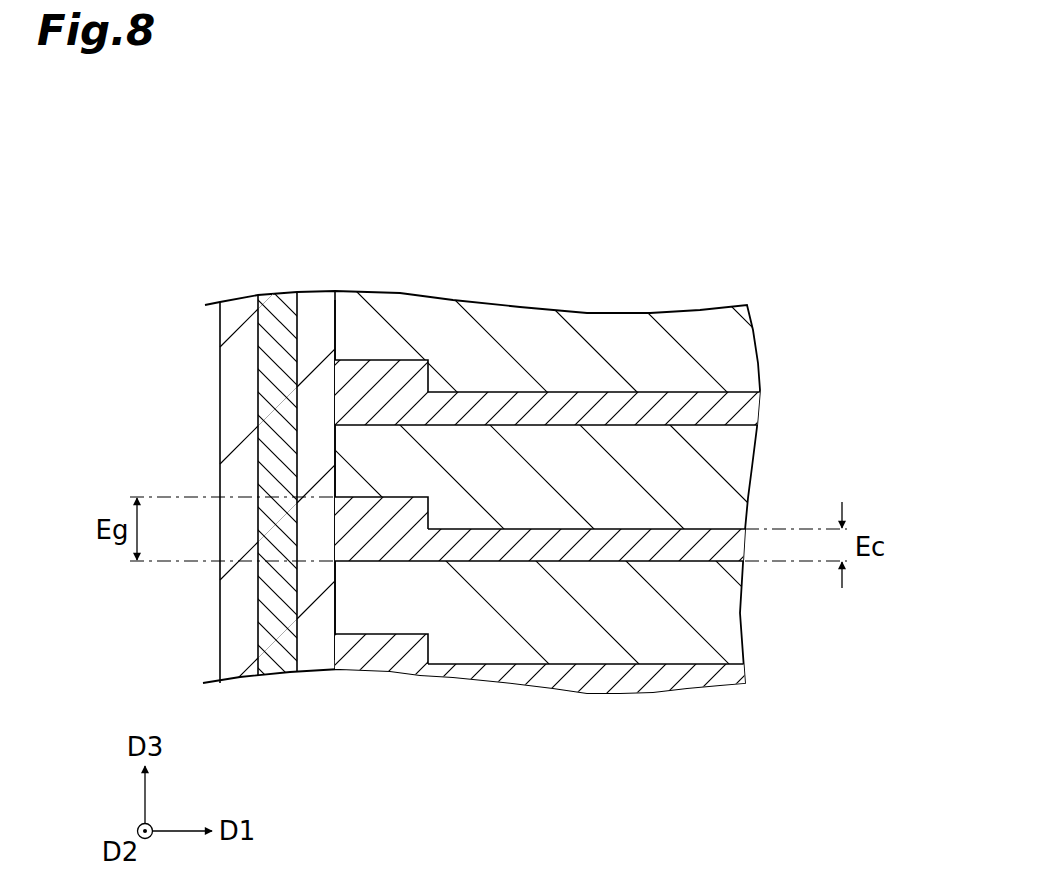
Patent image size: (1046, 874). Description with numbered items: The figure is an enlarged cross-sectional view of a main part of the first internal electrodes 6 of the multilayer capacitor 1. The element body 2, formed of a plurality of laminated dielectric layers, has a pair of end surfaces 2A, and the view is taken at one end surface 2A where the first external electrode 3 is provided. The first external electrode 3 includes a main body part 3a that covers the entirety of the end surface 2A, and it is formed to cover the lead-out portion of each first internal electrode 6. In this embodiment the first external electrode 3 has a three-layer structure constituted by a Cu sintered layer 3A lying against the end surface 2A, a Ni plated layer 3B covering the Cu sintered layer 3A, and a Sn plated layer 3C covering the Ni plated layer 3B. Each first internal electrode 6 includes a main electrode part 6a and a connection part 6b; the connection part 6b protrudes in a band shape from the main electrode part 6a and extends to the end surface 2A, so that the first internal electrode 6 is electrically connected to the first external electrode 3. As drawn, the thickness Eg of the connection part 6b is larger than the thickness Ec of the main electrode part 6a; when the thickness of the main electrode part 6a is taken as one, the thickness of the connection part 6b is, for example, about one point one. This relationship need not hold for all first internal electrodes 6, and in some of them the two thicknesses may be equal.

The multilayer capacitor 1 is at (221, 252).
The element body 2 is at (782, 317).
The end surface 2A is at (333, 327).
The first external electrode 3 is at (200, 350).
The main body part 3a is at (228, 403).
The Cu sintered layer 3A is at (315, 450).
The Ni plated layer 3B is at (272, 593).
The Sn plated layer 3C is at (240, 642).
The first internal electrode 6 is at (677, 388).
The main electrode part 6a is at (524, 405).
The connection part 6b is at (378, 377).